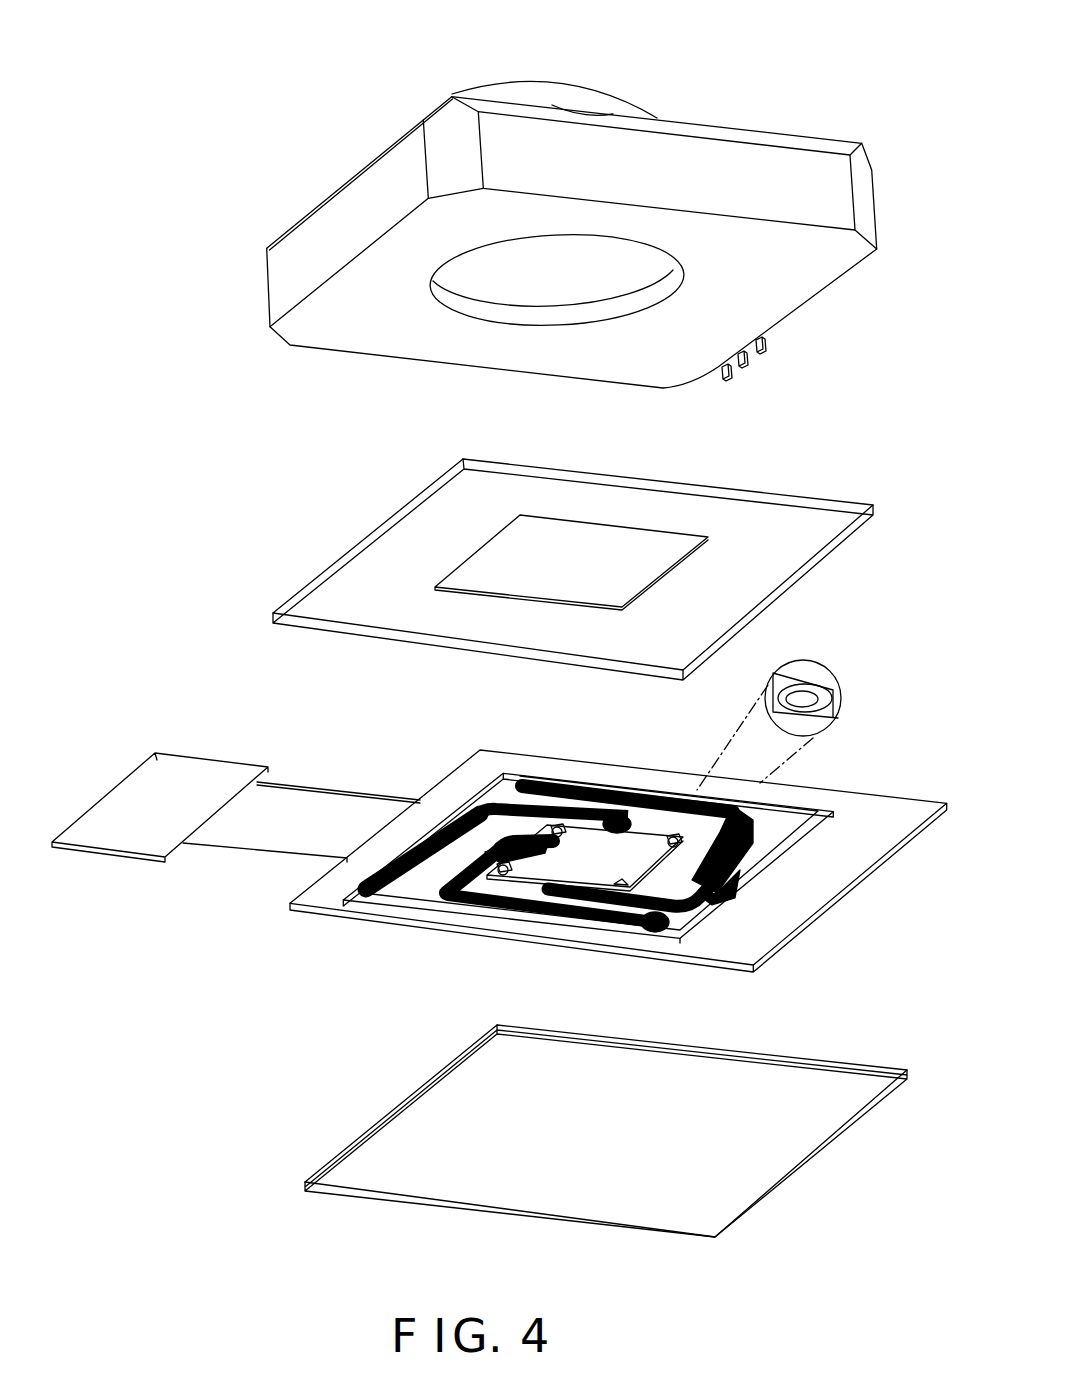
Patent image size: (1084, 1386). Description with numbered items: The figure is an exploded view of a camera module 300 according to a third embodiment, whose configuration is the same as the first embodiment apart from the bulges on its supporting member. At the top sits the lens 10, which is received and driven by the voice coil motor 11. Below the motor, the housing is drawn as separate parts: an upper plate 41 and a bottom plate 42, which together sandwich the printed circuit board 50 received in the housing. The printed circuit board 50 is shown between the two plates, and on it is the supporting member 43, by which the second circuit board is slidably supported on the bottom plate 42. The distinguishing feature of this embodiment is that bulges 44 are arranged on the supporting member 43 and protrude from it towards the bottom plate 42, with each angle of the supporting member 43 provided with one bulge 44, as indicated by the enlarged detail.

The camera module 300 is at (496, 25).
The lens 10 is at (627, 103).
The voice coil motor 11 is at (283, 275).
The upper plate 41 is at (385, 557).
The bottom plate 42 is at (417, 1115).
The supporting member 43 is at (607, 813).
The bulge 44 is at (805, 700).
The printed circuit board 50 is at (499, 816).